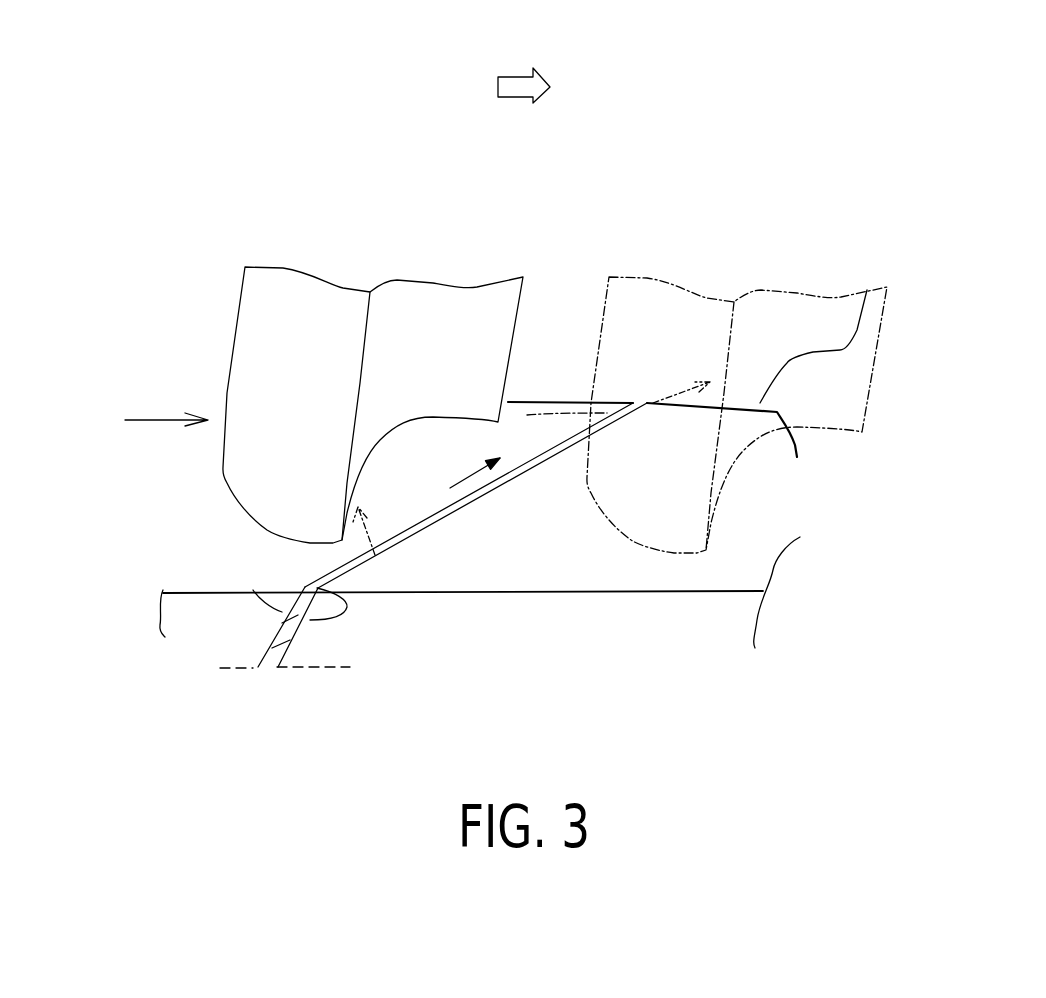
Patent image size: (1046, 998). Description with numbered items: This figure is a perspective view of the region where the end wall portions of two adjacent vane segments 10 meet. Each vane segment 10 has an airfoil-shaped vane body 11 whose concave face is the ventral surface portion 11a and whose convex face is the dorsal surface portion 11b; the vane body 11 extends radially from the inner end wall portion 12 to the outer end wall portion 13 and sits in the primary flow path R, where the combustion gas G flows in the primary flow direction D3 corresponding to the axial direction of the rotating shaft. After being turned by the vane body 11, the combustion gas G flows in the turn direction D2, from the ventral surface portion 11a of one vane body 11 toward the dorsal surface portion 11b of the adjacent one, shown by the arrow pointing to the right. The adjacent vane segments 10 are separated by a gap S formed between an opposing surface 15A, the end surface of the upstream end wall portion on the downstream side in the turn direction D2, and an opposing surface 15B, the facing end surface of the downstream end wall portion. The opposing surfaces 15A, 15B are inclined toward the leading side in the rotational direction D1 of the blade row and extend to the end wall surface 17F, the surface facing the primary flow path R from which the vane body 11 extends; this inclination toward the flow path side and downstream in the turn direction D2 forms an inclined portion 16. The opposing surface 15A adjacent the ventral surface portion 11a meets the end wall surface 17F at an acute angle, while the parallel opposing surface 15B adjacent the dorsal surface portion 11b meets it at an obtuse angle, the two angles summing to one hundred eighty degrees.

The vane segment 10 is at (461, 339).
The vane body 11 is at (232, 375).
The ventral surface portion 11a is at (440, 302).
The dorsal surface portion 11b is at (247, 295).
The inner end wall portion 12 is at (533, 393).
The outer end wall portion 13 is at (867, 295).
The opposing surface 15A is at (287, 640).
The opposing surface 15B is at (305, 588).
The inclined portion 16 is at (283, 623).
The end wall surface 17F is at (177, 593).
The primary flow path R is at (637, 254).
The combustion gas G is at (376, 556).
The gap S is at (422, 522).
The rotational direction D1 is at (168, 417).
The turn direction D2 is at (520, 72).
The primary flow direction D3 is at (477, 483).